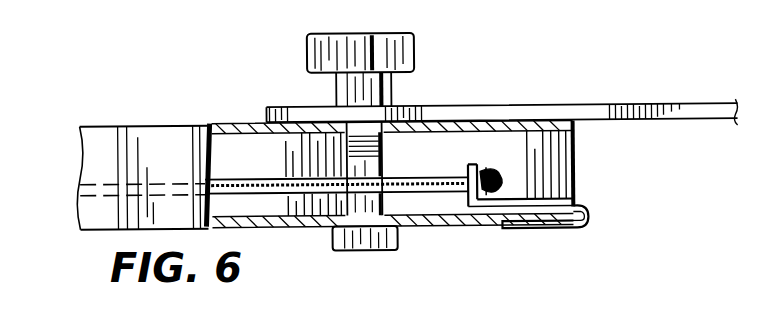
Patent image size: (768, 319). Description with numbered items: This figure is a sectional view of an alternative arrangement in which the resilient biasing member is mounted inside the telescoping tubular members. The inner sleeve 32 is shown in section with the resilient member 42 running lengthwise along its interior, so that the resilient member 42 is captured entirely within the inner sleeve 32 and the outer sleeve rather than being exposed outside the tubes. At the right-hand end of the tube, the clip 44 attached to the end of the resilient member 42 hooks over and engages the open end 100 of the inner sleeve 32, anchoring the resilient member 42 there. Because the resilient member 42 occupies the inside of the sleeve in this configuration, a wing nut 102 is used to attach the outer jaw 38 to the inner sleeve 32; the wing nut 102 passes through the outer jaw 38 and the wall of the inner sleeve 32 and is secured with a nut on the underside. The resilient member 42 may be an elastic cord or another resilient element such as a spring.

The inner sleeve 32 is at (175, 122).
The outer jaw 38 is at (694, 105).
The resilient member 42 is at (430, 177).
The clip 44 is at (588, 220).
The open end 100 is at (577, 158).
The wing nut 102 is at (412, 56).